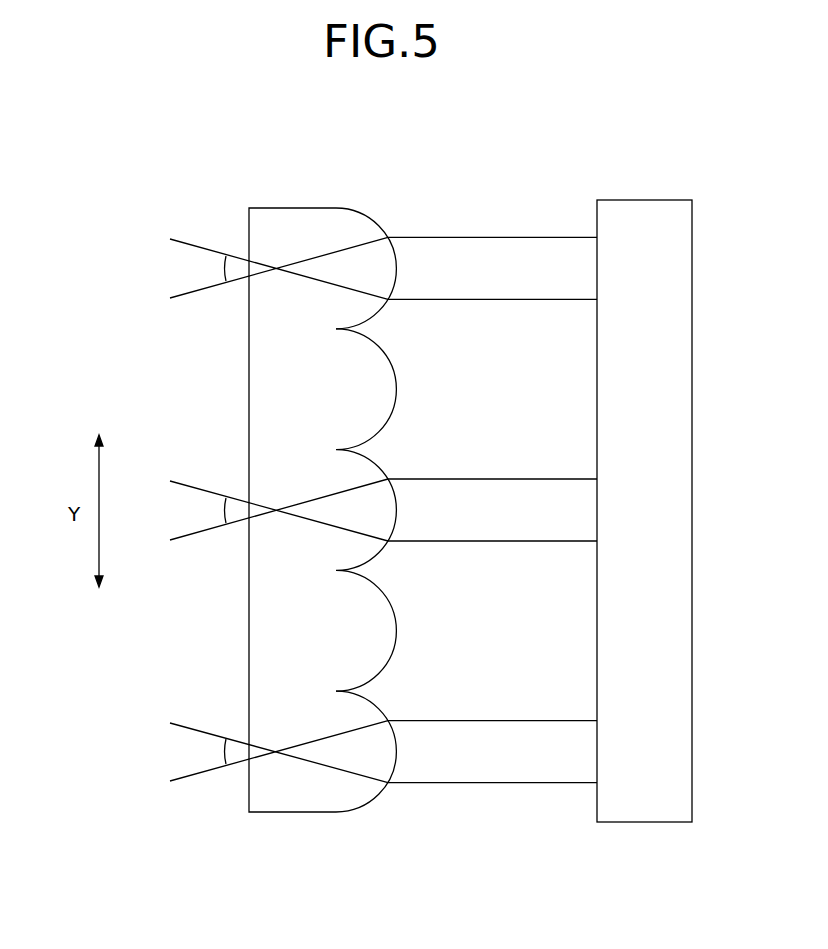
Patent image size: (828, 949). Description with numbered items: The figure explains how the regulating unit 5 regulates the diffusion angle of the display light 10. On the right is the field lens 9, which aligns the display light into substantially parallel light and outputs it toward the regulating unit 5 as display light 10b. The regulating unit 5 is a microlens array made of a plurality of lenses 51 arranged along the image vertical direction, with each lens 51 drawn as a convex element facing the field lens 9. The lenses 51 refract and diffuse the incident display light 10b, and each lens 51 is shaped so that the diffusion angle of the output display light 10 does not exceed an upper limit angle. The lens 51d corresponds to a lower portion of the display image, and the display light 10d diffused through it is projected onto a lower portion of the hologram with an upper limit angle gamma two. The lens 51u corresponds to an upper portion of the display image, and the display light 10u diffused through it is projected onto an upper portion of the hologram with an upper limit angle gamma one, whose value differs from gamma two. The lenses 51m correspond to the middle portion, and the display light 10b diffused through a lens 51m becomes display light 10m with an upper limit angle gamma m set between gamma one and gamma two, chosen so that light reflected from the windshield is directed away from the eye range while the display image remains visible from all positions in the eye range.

The regulating unit 5 is at (322, 194).
The field lens 9 is at (644, 200).
The display light 10 is at (279, 457).
The display light diffused through lens 51d 10d is at (192, 234).
The display light diffused through lens 51m 10m is at (192, 480).
The display light diffused through lens 51u 10u is at (192, 722).
The display light made incident from the field lens 10b is at (509, 233).
The lens 51 is at (412, 477).
The lens corresponding to a lower portion of the display image 51d is at (384, 222).
The lens corresponding to a middle portion of the display image 51m is at (389, 362).
The lens corresponding to an upper portion of the display image 51u is at (375, 703).